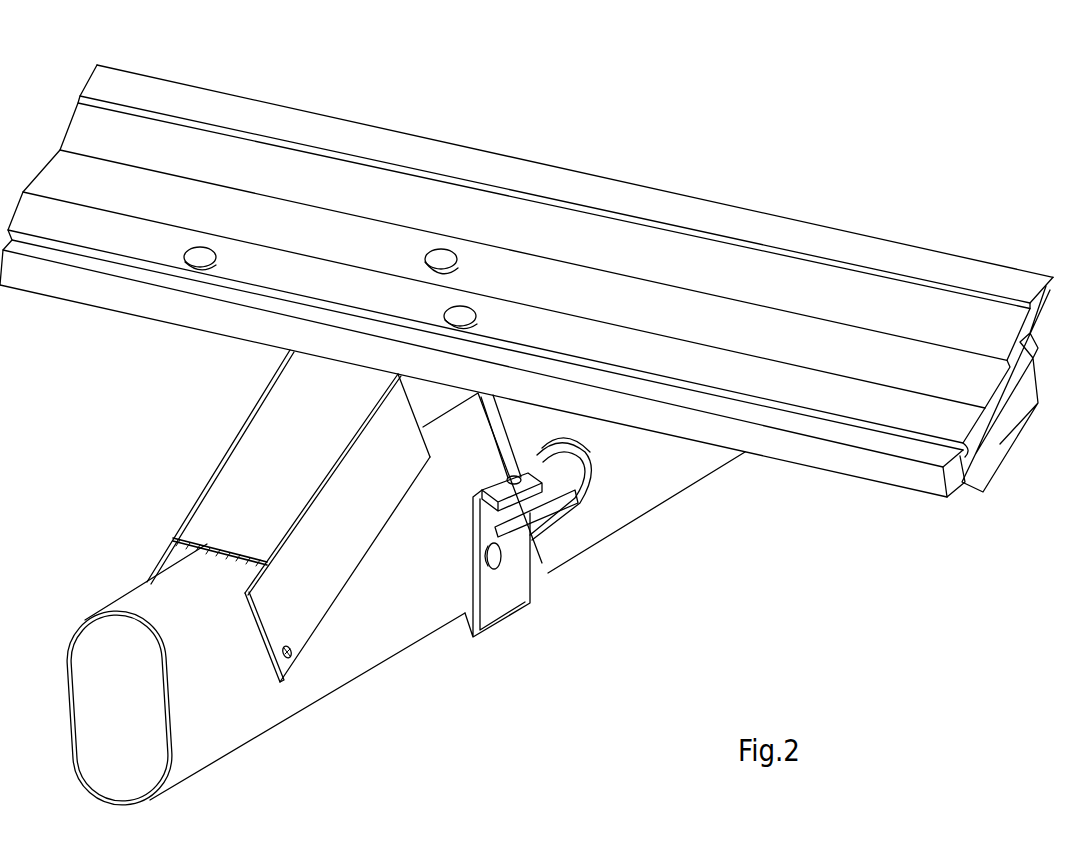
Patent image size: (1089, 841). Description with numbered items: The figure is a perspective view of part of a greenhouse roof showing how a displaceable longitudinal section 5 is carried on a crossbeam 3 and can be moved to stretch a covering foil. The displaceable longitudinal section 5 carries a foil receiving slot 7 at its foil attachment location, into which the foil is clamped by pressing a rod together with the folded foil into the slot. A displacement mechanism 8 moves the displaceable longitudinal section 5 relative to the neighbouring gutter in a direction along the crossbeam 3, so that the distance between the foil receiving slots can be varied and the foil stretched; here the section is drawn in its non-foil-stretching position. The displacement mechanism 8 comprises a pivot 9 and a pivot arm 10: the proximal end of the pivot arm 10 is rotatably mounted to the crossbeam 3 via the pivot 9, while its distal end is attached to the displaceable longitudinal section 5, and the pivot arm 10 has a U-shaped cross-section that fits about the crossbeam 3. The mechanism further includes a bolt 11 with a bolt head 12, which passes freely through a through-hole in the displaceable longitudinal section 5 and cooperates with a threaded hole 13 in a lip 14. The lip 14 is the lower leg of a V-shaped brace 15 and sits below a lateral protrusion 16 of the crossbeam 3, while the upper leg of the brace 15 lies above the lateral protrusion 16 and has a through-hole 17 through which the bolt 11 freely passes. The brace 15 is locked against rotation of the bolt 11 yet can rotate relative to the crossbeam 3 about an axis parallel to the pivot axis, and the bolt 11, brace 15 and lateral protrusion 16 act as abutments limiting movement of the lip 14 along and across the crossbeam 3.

The crossbeam 3 is at (147, 602).
The displaceable longitudinal section 5 is at (885, 240).
The foil receiving slot 7 is at (953, 462).
The displacement mechanism 8 is at (247, 407).
The pivot 9 is at (293, 663).
The pivot arm 10 is at (212, 502).
The bolt 11 is at (507, 410).
The bolt head 12 is at (467, 303).
The threaded hole 13 is at (542, 515).
The lip 14 is at (563, 503).
The V-shaped brace 15 is at (590, 503).
The lateral protrusion 16 is at (525, 550).
The through-hole 17 is at (590, 452).